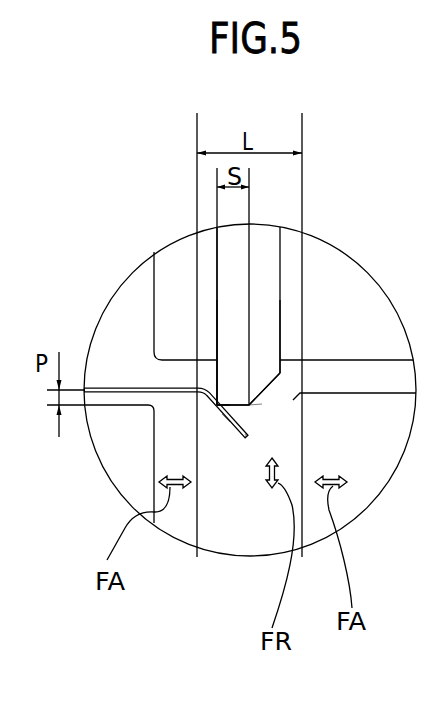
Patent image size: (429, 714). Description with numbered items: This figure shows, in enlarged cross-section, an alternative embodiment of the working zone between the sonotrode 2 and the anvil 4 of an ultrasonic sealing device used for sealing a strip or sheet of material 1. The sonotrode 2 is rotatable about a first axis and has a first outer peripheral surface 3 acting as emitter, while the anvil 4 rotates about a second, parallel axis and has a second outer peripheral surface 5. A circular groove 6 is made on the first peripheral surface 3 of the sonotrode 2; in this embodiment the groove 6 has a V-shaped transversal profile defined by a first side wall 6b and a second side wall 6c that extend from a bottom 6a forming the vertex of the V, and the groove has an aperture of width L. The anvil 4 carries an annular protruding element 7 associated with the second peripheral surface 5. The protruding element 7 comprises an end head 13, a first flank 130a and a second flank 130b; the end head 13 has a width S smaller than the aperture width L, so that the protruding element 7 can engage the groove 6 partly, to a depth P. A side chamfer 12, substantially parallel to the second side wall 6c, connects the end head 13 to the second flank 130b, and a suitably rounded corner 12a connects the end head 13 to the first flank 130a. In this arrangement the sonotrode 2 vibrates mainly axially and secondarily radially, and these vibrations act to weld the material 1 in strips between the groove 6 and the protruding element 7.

The strip or sheet of material 1 is at (120, 388).
The sonotrode 2 is at (373, 475).
The first outer peripheral surface 3 is at (388, 394).
The anvil 4 is at (350, 290).
The second outer peripheral surface 5 is at (173, 363).
The circular groove 6 is at (262, 395).
The bottom 6a is at (247, 443).
The first side wall 6b is at (222, 414).
The second side wall 6c is at (262, 405).
The protruding element 7 is at (240, 248).
The side chamfer 12 is at (273, 380).
The corner 12a is at (215, 401).
The end head 13 is at (228, 402).
The first flank 130a is at (217, 325).
The second flank 130b is at (282, 343).